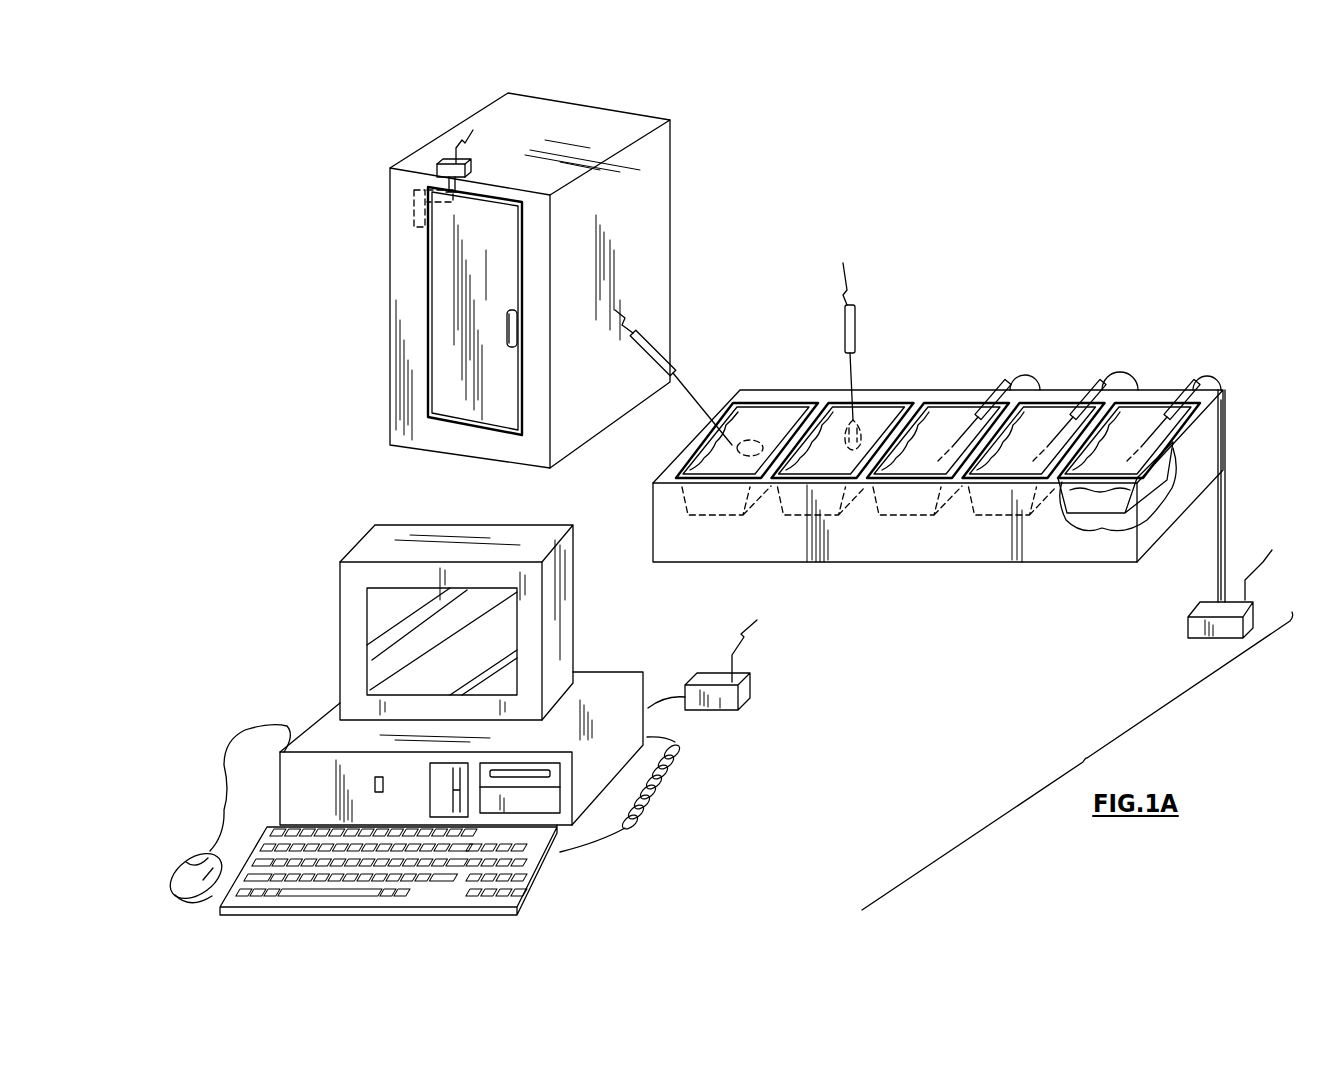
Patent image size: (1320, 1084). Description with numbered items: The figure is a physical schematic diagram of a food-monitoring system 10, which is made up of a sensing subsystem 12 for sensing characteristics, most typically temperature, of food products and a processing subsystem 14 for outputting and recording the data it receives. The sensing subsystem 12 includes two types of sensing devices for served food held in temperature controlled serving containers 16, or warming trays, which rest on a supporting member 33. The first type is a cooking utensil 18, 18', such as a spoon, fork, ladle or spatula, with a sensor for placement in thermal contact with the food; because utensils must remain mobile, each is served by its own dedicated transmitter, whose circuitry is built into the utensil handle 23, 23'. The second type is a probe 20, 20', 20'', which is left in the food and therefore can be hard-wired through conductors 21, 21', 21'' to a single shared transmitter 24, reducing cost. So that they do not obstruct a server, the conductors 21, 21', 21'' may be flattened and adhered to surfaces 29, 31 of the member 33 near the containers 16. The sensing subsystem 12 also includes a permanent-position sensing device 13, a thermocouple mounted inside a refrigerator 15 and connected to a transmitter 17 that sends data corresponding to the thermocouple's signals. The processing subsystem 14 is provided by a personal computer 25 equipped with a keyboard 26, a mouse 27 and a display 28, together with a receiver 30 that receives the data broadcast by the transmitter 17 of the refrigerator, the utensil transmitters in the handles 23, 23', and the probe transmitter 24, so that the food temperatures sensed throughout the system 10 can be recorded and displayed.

The system 10 is at (1027, 708).
The sensing subsystem 12 is at (984, 294).
The sensing device 13 is at (412, 226).
The processing subsystem 14 is at (743, 730).
The refrigerator 15 is at (590, 130).
The temperature controlled serving containers 16 is at (720, 522).
The transmitter 17 is at (437, 162).
The cooking utensil 18 is at (718, 406).
The utensil sensing device 18' is at (885, 401).
The probe 20 is at (974, 406).
The probe 20' is at (1069, 402).
The probe 20'' is at (1163, 402).
The conductor 21 is at (1012, 353).
The conductor 21' is at (1107, 350).
The conductor 21'' is at (1197, 350).
The utensil handle 23 is at (663, 340).
The utensil handle 23' is at (879, 308).
The transmitter 24 is at (1193, 632).
The personal computer 25 is at (603, 683).
The keyboard 26 is at (532, 880).
The mouse 27 is at (185, 873).
The display 28 is at (378, 645).
The surface 29 is at (767, 422).
The receiver 30 is at (750, 690).
The surface 31 is at (1150, 533).
The member 33 is at (965, 535).